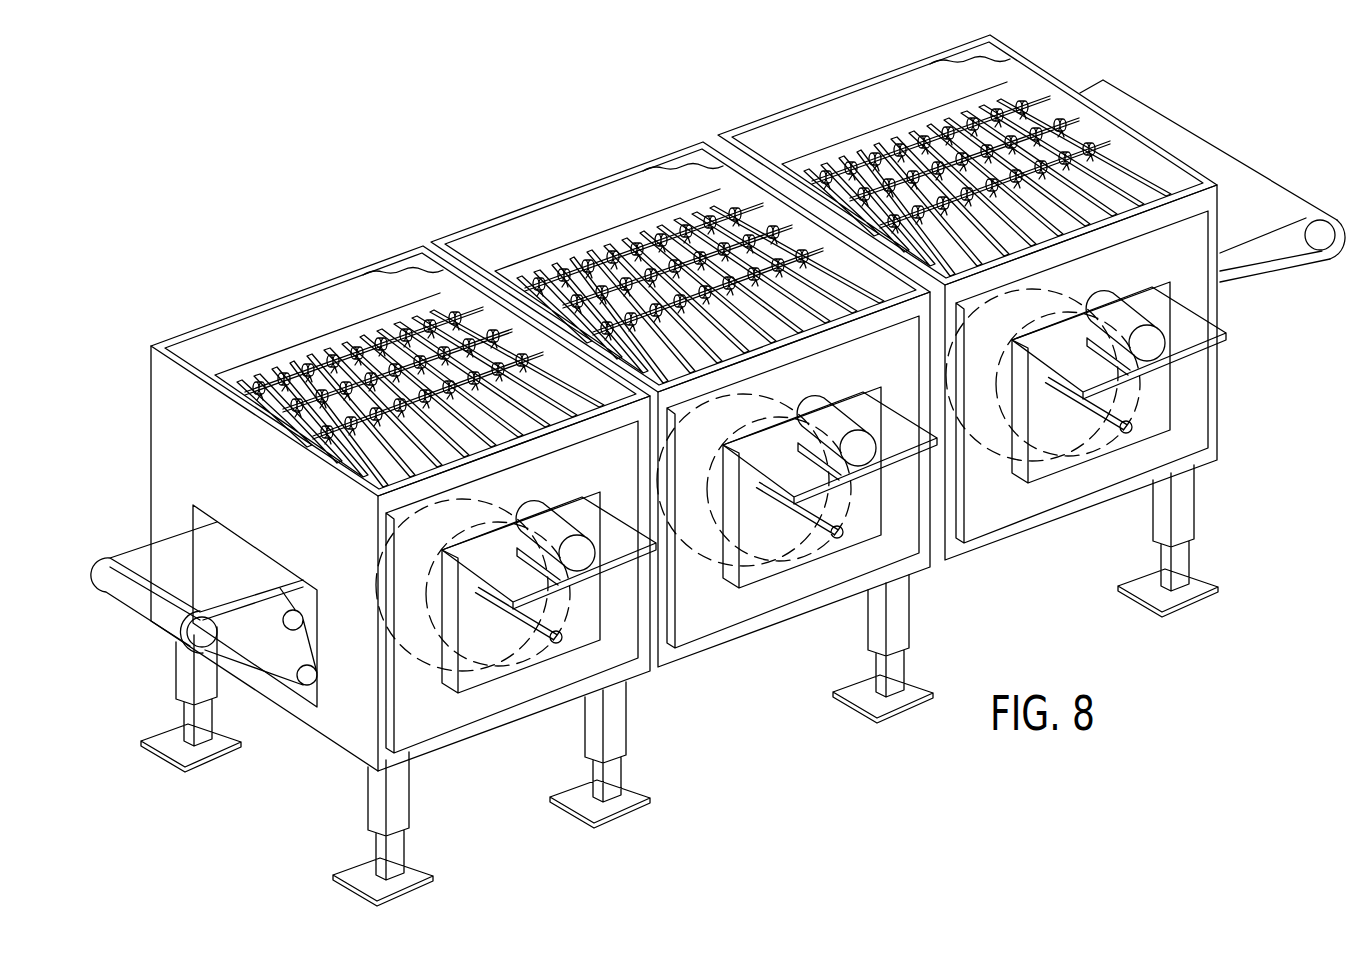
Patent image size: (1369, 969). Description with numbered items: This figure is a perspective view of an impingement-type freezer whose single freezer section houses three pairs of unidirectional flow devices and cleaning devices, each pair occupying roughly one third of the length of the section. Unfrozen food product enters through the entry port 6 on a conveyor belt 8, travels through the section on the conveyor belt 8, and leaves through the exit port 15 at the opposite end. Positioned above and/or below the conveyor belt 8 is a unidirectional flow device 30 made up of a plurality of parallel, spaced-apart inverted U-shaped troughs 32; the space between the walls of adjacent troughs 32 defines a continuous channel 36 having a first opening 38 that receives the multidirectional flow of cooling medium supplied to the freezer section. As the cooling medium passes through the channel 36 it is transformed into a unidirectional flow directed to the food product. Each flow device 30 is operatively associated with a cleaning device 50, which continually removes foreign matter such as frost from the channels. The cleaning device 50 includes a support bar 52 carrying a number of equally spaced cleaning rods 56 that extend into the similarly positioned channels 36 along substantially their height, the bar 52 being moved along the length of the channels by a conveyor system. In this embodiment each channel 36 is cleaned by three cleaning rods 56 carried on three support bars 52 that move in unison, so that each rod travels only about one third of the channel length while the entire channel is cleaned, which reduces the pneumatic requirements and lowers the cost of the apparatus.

The entry port 6 is at (193, 522).
The conveyor belt 8 is at (1246, 218).
The exit port 15 is at (1215, 191).
The unidirectional flow device 30 is at (403, 557).
The trough 32 is at (684, 398).
The channel 36 is at (645, 233).
The first opening 38 is at (348, 320).
The cleaning device 50 is at (1050, 92).
The support bar 52 is at (1008, 120).
The cleaning rod 56 is at (1115, 82).